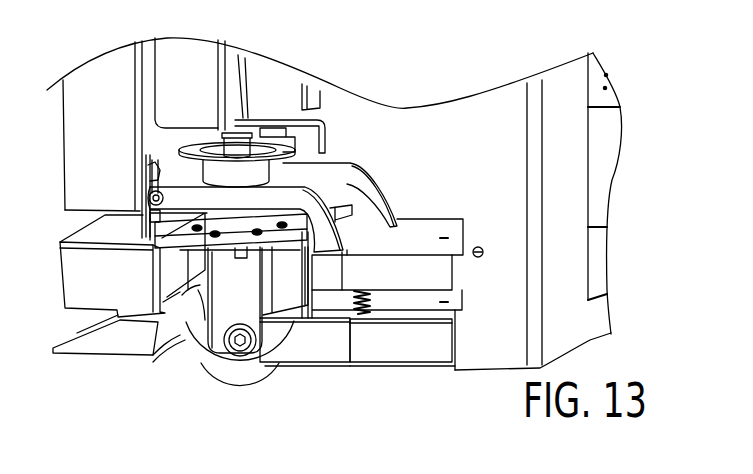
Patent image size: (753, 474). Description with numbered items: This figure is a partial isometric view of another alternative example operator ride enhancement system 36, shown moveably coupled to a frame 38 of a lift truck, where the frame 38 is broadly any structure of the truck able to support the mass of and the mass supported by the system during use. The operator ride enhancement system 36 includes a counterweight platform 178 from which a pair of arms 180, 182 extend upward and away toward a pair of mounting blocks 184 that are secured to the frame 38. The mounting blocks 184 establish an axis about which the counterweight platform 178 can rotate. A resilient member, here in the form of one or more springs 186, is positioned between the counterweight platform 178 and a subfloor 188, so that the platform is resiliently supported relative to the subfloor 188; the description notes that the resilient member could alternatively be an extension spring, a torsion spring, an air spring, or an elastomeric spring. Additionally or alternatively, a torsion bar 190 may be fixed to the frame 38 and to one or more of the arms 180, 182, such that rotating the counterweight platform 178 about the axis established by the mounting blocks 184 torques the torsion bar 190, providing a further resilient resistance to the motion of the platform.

The operator ride enhancement system 36 is at (436, 190).
The frame 38 is at (452, 131).
The counterweight platform 178 is at (417, 283).
The arm 180 is at (302, 211).
The arm 182 is at (351, 184).
The mounting block 184 is at (150, 165).
The spring 186 is at (362, 312).
The subfloor 188 is at (442, 352).
The torsion bar 190 is at (150, 196).